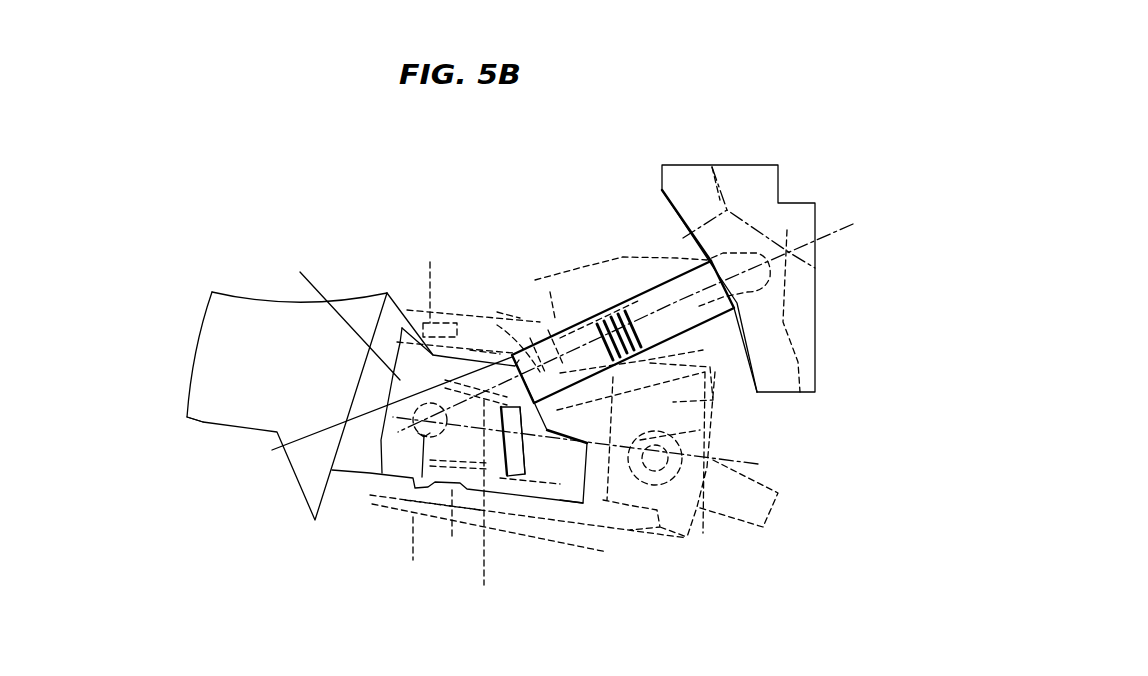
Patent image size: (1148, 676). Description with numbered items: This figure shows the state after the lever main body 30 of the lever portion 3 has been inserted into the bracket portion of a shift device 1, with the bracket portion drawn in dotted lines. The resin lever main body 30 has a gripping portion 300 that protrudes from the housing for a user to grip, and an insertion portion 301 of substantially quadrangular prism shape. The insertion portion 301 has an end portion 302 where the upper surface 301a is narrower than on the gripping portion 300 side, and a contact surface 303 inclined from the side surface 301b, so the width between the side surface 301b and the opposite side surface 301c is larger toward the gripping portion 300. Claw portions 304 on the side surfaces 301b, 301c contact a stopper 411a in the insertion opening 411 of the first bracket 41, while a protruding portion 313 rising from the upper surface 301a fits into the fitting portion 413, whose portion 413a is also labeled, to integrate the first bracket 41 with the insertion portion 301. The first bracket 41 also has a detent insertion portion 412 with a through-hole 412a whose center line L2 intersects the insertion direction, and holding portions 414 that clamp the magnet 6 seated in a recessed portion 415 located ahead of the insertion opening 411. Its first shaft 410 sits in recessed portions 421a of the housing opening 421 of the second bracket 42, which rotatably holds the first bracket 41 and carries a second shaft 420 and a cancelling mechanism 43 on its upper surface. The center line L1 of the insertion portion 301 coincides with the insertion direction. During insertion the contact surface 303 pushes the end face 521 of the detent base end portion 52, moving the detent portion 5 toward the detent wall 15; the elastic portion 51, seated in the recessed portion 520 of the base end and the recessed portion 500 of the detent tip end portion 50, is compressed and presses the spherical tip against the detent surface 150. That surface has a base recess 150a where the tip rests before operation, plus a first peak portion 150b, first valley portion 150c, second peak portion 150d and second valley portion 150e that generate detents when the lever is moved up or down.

The robot 1 is at (841, 121).
The lever portion 3 is at (261, 269).
The detent portion 5 is at (647, 207).
The magnet 6 is at (623, 503).
The detent wall 15 is at (790, 217).
The lever main body 30 is at (212, 292).
The first bracket 41 is at (674, 552).
The second bracket 42 is at (664, 553).
The cancelling mechanism 43 is at (783, 482).
The detent tip end portion 50 is at (660, 305).
The elastic portion 51 is at (600, 322).
The detent base end portion 52 is at (535, 322).
The detent surface 150 is at (749, 297).
The base recess 150a is at (790, 253).
The first peak portion 150b is at (783, 322).
The first valley portion 150c is at (758, 380).
The second peak portion 150d is at (727, 210).
The second valley portion 150e is at (717, 188).
The gripping portion 300 is at (203, 422).
The insertion portion 301 is at (397, 455).
The upper surface 301a is at (593, 578).
The side surface 301b is at (470, 350).
The side surface 301c is at (458, 496).
The end portion 302 is at (585, 505).
The contact surface 303 is at (373, 411).
The claw portions 304 is at (402, 328).
The protruding portion 313 is at (527, 477).
The first shaft 410 is at (425, 323).
The insertion opening 411 is at (402, 510).
The stopper 411a is at (450, 537).
The detent insertion portion 412 is at (670, 257).
The through-hole 412a is at (537, 340).
The fitting portion 413 is at (498, 478).
The holder surface 413a is at (505, 540).
The holding portions 414 is at (662, 518).
The recessed portion 415 is at (703, 427).
The second shaft 420 is at (428, 500).
The housing opening 421 is at (405, 328).
The recessed portions 421a is at (378, 568).
The recessed portion 500 is at (625, 315).
The recessed portion 520 is at (550, 292).
The end face 521 is at (498, 312).
The center line L1 is at (590, 453).
The center line L2 is at (639, 318).